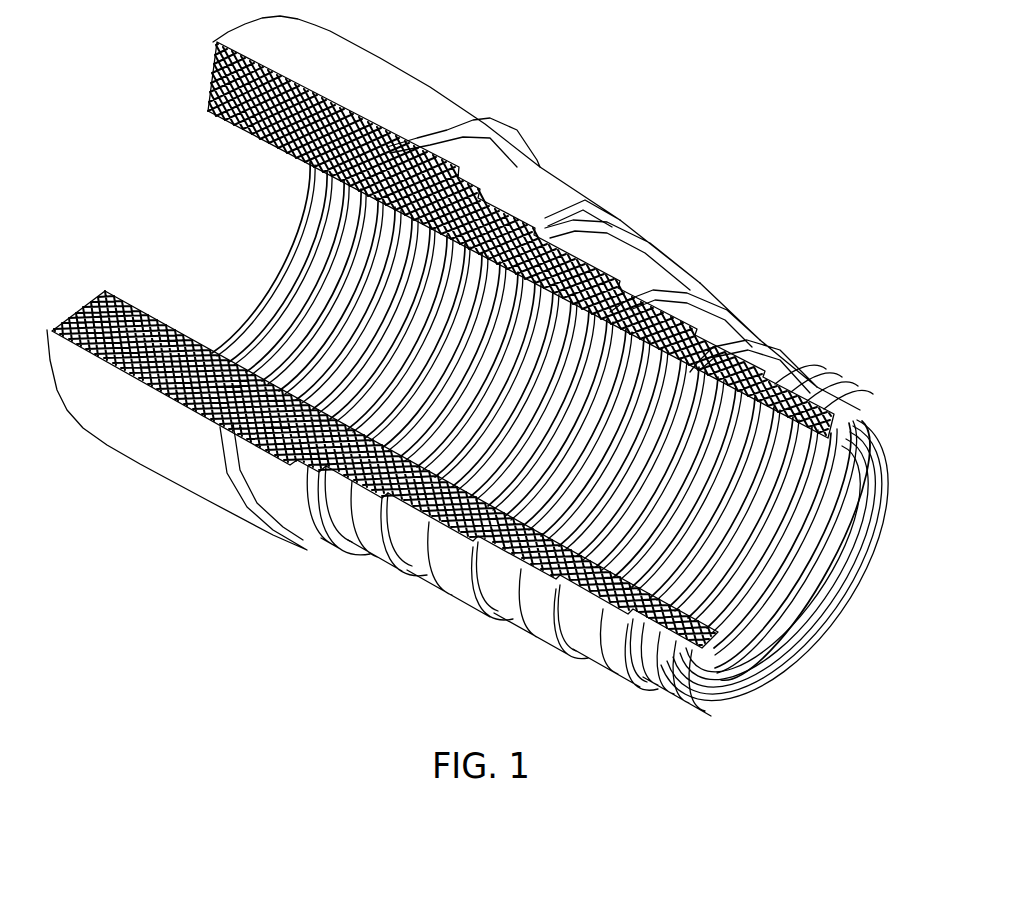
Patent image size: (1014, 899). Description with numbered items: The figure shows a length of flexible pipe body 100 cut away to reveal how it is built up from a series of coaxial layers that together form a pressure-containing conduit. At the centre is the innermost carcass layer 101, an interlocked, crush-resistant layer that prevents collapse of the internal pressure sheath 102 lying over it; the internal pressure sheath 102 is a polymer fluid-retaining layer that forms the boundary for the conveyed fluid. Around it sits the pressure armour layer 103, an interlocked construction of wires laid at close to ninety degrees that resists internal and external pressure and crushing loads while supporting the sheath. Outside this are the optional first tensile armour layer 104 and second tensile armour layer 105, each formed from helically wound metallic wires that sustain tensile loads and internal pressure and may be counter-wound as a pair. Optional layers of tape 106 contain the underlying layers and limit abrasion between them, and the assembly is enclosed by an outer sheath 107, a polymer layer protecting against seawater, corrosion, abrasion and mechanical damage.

The pipe body 100 is at (482, 366).
The carcass layer 101 is at (862, 413).
The internal pressure sheath 102 is at (791, 354).
The pressure armour layer 103 is at (724, 294).
The first tensile armour layer 104 is at (653, 242).
The second tensile armour layer 105 is at (578, 193).
The layers of tape 106 is at (298, 533).
The outer sheath 107 is at (436, 84).